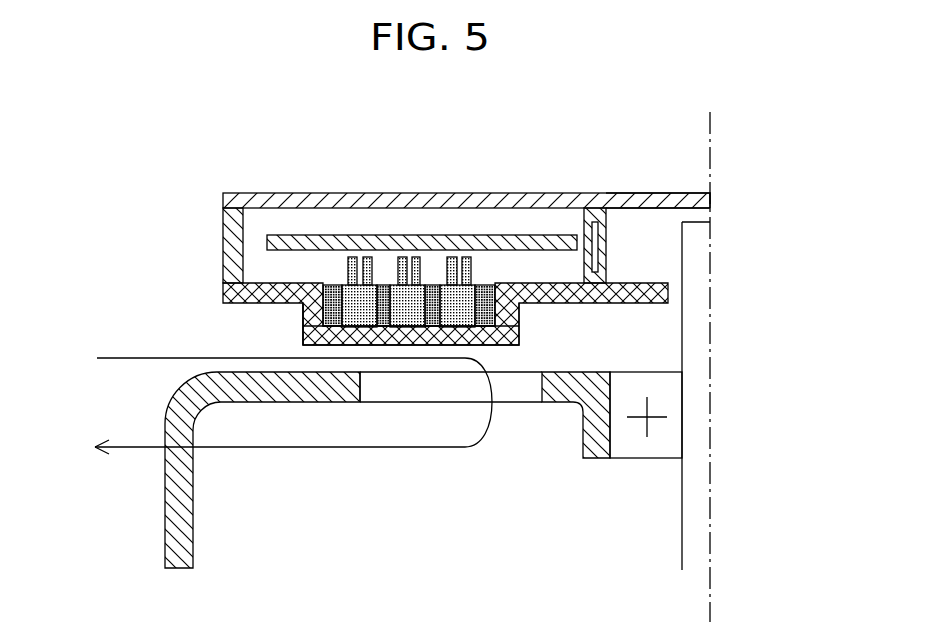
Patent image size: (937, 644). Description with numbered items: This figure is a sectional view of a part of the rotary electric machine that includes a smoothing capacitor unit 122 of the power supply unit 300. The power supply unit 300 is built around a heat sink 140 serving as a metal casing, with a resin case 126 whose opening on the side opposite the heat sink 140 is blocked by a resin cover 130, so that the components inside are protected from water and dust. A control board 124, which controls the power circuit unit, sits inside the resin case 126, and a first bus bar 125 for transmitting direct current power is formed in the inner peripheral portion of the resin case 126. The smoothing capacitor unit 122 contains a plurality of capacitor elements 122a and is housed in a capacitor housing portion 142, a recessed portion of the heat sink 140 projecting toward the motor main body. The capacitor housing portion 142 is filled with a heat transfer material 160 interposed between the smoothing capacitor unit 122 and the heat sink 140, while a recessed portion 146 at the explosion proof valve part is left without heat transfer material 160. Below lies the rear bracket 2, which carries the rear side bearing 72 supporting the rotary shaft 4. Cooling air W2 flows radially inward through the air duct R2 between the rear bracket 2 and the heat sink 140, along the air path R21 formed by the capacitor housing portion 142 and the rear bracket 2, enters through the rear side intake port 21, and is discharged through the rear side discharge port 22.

The power supply unit 300 is at (100, 183).
The resin case 126 is at (233, 236).
The resin cover 130 is at (683, 200).
The control board 124 is at (487, 242).
The first bus bar 125 is at (585, 232).
The heat sink 140 is at (655, 295).
The recessed portion 146 is at (520, 323).
The capacitor housing portion 142 is at (490, 343).
The heat transfer material 160 is at (495, 307).
The smoothing capacitor unit 122 is at (380, 262).
The capacitor element 122a is at (343, 283).
The air duct R2 is at (258, 322).
The cooling air W2 is at (273, 398).
The rear side bearing 72 is at (672, 449).
The rotary shaft 4 is at (690, 527).
The rear bracket 2 is at (598, 448).
The rear side intake port 21 is at (500, 395).
The air path R21 is at (348, 372).
The rear side discharge port 22 is at (180, 483).